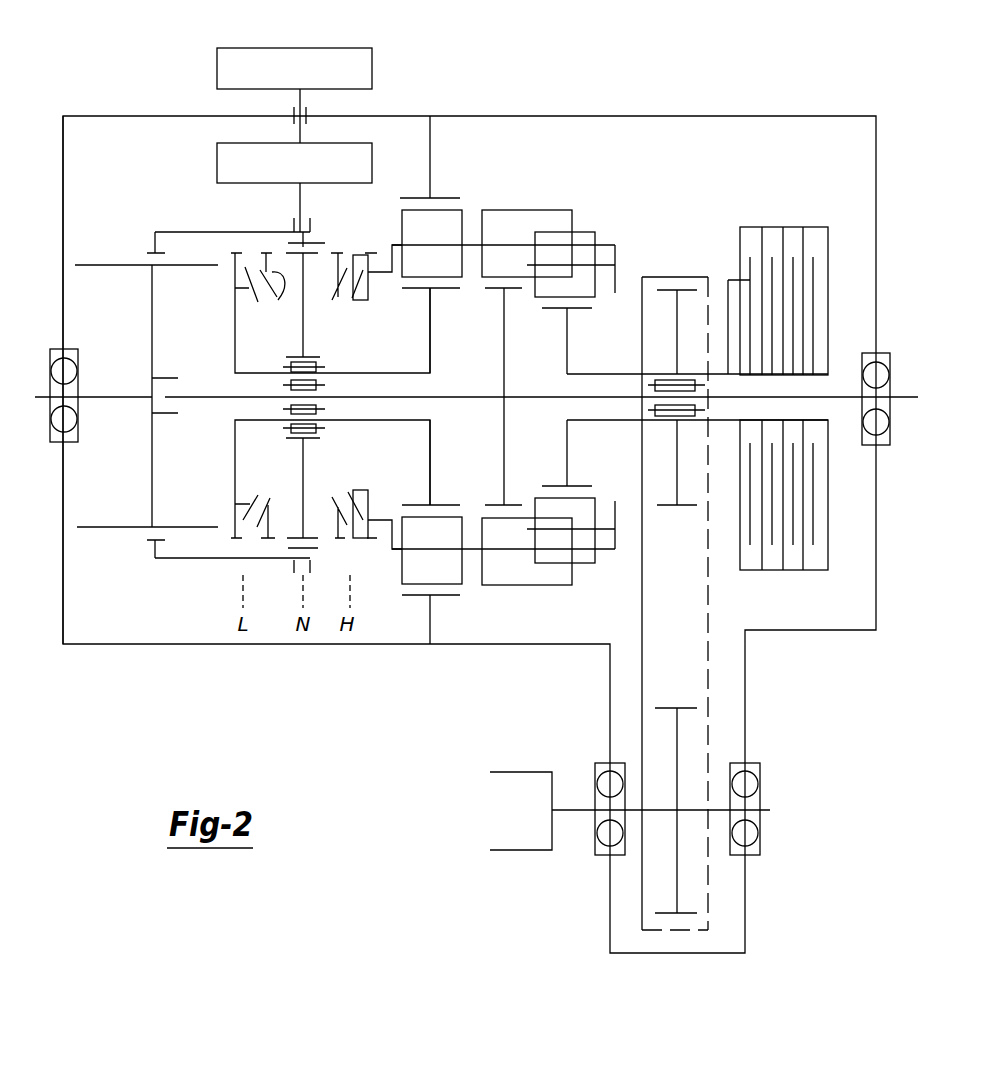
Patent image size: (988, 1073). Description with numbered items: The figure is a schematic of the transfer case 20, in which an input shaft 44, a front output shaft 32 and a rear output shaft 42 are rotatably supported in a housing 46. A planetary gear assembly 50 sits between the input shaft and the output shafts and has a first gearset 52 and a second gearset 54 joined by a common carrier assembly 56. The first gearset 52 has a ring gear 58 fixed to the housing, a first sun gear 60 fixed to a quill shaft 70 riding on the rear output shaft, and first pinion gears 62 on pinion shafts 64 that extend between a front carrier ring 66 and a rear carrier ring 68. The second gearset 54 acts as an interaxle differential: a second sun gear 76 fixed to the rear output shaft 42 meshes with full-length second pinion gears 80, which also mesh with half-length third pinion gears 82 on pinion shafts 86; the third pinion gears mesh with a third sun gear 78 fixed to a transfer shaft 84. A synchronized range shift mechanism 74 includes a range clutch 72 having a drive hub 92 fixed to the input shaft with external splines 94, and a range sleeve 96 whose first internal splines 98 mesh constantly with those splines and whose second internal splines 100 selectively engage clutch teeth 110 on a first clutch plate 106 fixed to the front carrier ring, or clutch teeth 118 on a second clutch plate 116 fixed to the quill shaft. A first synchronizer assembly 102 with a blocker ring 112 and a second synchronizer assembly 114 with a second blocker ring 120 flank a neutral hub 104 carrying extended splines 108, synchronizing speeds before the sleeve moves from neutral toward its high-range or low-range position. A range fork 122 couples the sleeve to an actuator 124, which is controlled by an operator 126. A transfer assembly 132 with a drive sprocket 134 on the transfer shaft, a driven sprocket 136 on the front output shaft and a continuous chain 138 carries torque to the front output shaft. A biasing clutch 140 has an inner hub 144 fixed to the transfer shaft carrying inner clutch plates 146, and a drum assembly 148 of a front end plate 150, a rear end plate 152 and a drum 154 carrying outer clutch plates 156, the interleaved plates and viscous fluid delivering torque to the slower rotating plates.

The transfer case 20 is at (714, 82).
The front output shaft 32 is at (585, 810).
The rear output shaft 42 is at (902, 398).
The input shaft 44 is at (38, 392).
The housing 46 is at (845, 116).
The planetary gear assembly 50 is at (594, 208).
The first gearset 52 is at (468, 208).
The second gearset 54 is at (566, 208).
The carrier assembly 56 is at (627, 257).
The ring gear 58 is at (420, 198).
The first sun gear 60 is at (432, 358).
The first pinion gears 62 is at (400, 198).
The pinion shaft 64 is at (475, 247).
The front carrier ring 66 is at (392, 540).
The rear carrier ring 68 is at (615, 535).
The quill shaft 70 is at (384, 372).
The range clutch 72 is at (176, 195).
The synchronized range shift mechanism 74 is at (380, 131).
The second sun gear 76 is at (504, 350).
The third sun gear 78 is at (568, 330).
The second pinion gears 80 is at (510, 213).
The third pinion gears 82 is at (592, 500).
The transfer shaft 84 is at (620, 374).
The pinion shaft 86 is at (615, 250).
The drive hub 92 is at (152, 310).
The external splines 94 is at (134, 265).
The range sleeve 96 is at (208, 232).
The first set of internal splines 98 is at (152, 540).
The second set of internal splines 100 is at (312, 234).
The first synchronizer assembly 102 is at (360, 488).
The neutral hub 104 is at (312, 345).
The first clutch plate 106 is at (368, 292).
The extended splines 108 is at (318, 545).
The clutch teeth 110 is at (378, 222).
The blocker ring 112 is at (333, 272).
The second synchronizer assembly 114 is at (270, 490).
The second clutch plate 116 is at (318, 345).
The clutch teeth 118 is at (230, 560).
The second blocker ring 120 is at (246, 305).
The range fork 122 is at (296, 220).
The actuator 124 is at (217, 155).
The operator 126 is at (217, 62).
The transfer assembly 132 is at (690, 528).
The drive sprocket 134 is at (680, 335).
The driven sprocket 136 is at (677, 735).
The continuous chain 138 is at (708, 681).
The biasing clutch 140 is at (793, 410).
The inner hub 144 is at (728, 373).
The inner clutch plates 146 is at (728, 280).
The drum assembly 148 is at (828, 572).
The front end plate 150 is at (740, 513).
The rear end plate 152 is at (828, 530).
The drum 154 is at (818, 227).
The outer clutch plates 156 is at (800, 562).